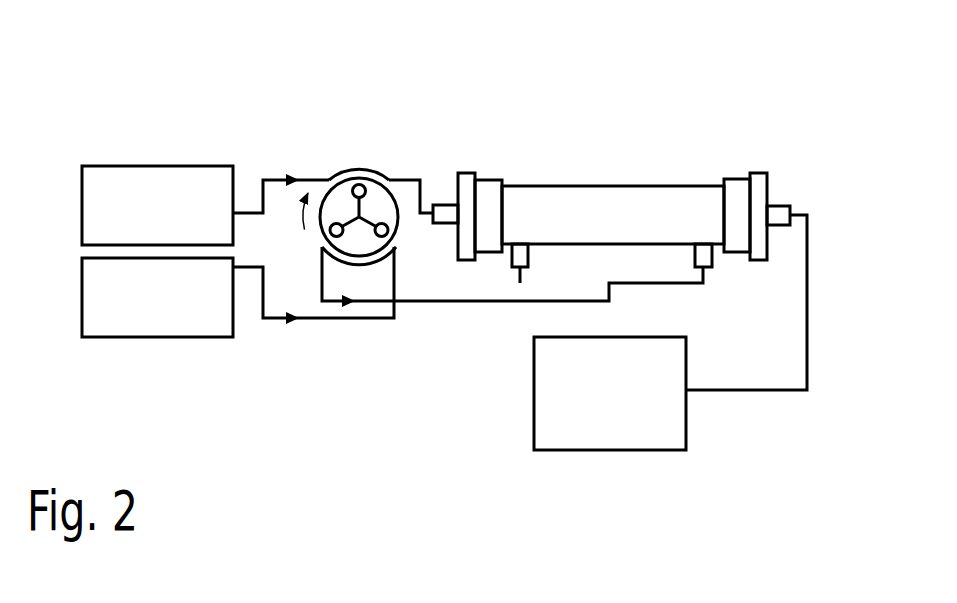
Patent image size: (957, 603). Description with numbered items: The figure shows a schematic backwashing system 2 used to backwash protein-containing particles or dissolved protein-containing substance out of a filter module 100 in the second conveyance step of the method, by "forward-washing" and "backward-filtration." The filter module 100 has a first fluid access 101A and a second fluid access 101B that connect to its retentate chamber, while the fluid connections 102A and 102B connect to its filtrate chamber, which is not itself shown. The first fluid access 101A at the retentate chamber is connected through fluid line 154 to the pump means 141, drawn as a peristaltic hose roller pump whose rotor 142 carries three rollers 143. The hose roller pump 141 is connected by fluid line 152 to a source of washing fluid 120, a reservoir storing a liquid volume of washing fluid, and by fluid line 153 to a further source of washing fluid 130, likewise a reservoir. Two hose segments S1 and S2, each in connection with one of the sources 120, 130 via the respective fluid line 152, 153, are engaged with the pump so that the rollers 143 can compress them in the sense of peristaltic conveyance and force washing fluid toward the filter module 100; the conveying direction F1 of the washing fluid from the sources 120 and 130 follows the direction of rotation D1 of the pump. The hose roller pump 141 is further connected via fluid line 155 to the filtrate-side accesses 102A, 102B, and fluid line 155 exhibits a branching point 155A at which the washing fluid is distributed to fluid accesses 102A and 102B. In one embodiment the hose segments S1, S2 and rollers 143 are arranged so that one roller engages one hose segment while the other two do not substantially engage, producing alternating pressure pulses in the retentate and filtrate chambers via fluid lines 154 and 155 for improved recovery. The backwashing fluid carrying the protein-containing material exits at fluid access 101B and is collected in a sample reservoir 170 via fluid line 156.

The backwashing system 2 is at (663, 108).
The filter module 100 is at (695, 178).
The first fluid access 101A is at (446, 202).
The second fluid access 101B is at (775, 200).
The fluid connection 102A is at (502, 270).
The fluid connection 102B is at (717, 268).
The source of washing fluid 120 is at (162, 162).
The further source of washing fluid 130 is at (158, 341).
The pump means 141 is at (422, 177).
The rotor 142 is at (400, 195).
The rollers 143 is at (353, 167).
The fluid line 152 is at (315, 170).
The fluid line 153 is at (347, 320).
The fluid line 154 is at (413, 212).
The fluid line 155 is at (440, 305).
The branching point 155A is at (618, 290).
The fluid line 156 is at (811, 323).
The sample reservoir 170 is at (628, 453).
The direction of rotation D1 is at (294, 211).
The hose segment S1 is at (362, 165).
The hose segment S2 is at (355, 267).
The conveying direction F1 is at (293, 325).